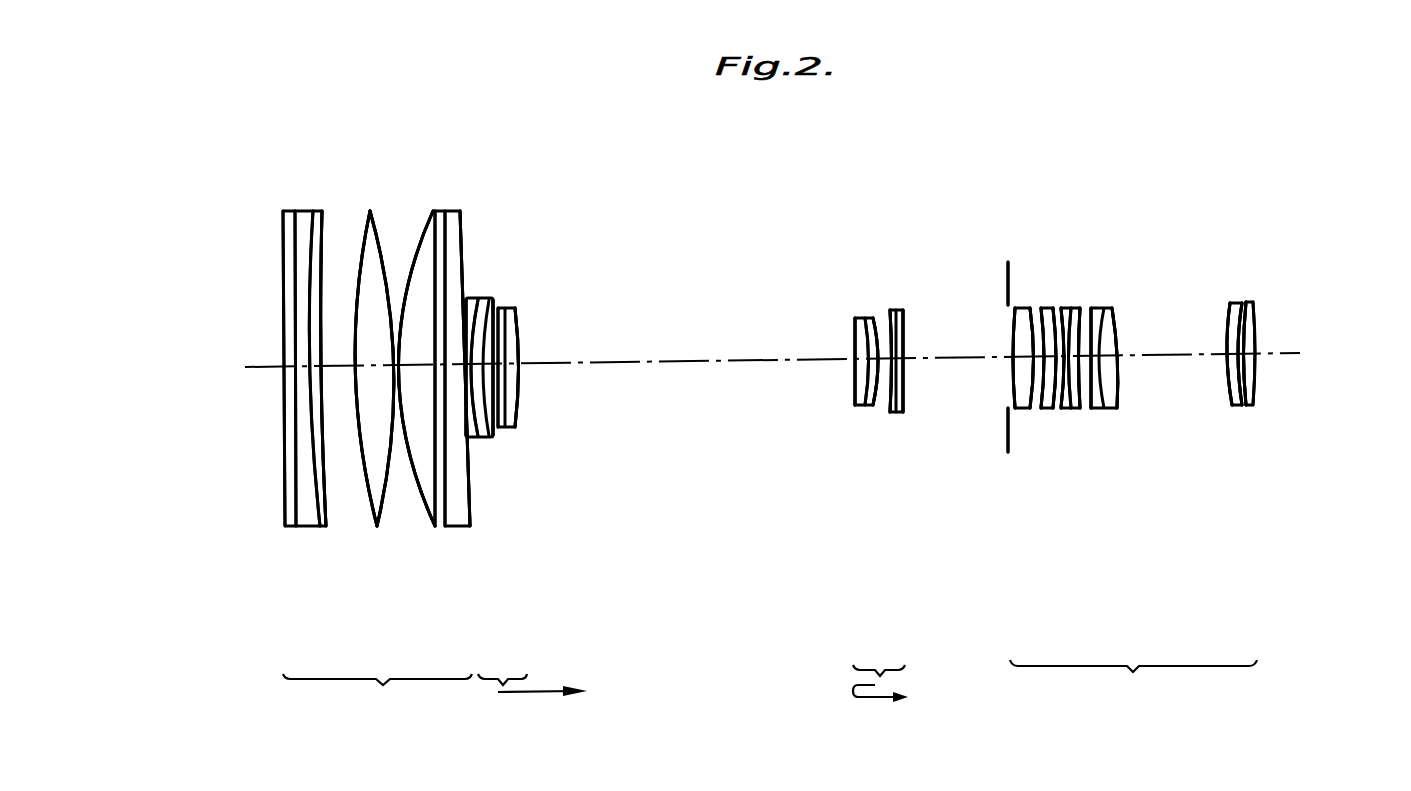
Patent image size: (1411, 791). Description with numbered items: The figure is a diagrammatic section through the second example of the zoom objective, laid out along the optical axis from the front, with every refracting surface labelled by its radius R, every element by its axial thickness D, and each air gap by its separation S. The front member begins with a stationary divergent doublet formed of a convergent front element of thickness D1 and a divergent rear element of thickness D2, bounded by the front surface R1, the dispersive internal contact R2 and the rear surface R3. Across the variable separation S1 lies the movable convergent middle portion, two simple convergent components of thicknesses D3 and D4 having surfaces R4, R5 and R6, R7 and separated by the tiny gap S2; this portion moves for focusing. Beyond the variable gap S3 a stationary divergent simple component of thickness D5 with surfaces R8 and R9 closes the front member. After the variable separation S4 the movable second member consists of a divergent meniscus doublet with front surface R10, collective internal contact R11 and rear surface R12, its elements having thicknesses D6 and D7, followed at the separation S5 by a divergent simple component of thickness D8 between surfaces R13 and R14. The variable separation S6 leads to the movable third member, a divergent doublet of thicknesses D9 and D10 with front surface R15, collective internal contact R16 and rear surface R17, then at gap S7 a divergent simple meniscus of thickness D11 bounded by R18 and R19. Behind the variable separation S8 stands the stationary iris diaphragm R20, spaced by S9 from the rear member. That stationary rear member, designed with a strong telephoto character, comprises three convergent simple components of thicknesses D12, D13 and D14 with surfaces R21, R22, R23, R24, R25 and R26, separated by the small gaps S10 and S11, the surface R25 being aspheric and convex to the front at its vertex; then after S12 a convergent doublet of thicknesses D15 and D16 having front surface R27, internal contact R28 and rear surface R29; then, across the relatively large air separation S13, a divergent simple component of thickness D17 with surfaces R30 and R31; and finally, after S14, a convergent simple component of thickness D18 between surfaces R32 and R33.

The front surface of the front member R1 is at (283, 331).
The dispersive internal contact R2 is at (295, 300).
The rear surface of the stationary front portion R3 is at (325, 258).
The front surface of the front middle component R4 is at (360, 263).
The rear surface of the front middle component R5 is at (373, 237).
The front surface of the rear middle component R6 is at (420, 233).
The rear surface of the rear middle component R7 is at (438, 213).
The front surface of the stationary rear portion R8 is at (447, 210).
The rear surface of the stationary rear portion R9 is at (468, 218).
The front surface of the second member doublet R10 is at (487, 312).
The collective internal contact of the second member doublet R11 is at (493, 318).
The rear surface of the second member doublet R12 is at (502, 318).
The front surface of the second member simple component R13 is at (518, 334).
The rear surface of the second member simple component R14 is at (517, 358).
The front surface of the third member doublet R15 is at (857, 326).
The collective internal contact of the third member doublet R16 is at (860, 320).
The rear surface of the third member doublet R17 is at (868, 316).
The front surface of the third member meniscus R18 is at (891, 312).
The rear surface of the third member meniscus R19 is at (898, 308).
The iris diaphragm R20 is at (1000, 285).
The front surface of the rear member R21 is at (1016, 308).
The rear surface of the first rear convergent component R22 is at (1032, 308).
The front surface of the second rear convergent component R23 is at (1043, 308).
The rear surface of the second rear convergent component R24 is at (1055, 308).
The aspheric surface R25 is at (1063, 308).
The rear surface of the third rear convergent component R26 is at (1072, 308).
The front surface of the rear member doublet R27 is at (1082, 308).
The internal contact of the rear member doublet R28 is at (1093, 308).
The rear surface of the rear member doublet R29 is at (1119, 340).
The front surface of the rear divergent component R30 is at (1236, 303).
The rear surface of the rear divergent component R31 is at (1244, 308).
The front surface of the final convergent component R32 is at (1250, 312).
The rear surface of the objective R33 is at (1256, 330).
The axial thickness of the convergent front element D1 is at (285, 373).
The axial thickness of the divergent rear element D2 is at (300, 384).
The axial thickness of the front middle component D3 is at (375, 405).
The axial thickness of the rear middle component D4 is at (415, 378).
The axial thickness of the stationary rear portion D5 is at (440, 527).
The axial thickness of the divergent element of the second member doublet D6 is at (500, 437).
The axial thickness of the collective element of the second member doublet D7 is at (505, 437).
The axial thickness of the second member simple component D8 is at (518, 382).
The axial thickness of the convergent element of the third member doublet D9 is at (857, 364).
The axial thickness of the divergent element of the third member doublet D10 is at (858, 393).
The axial thickness of the third member meniscus D11 is at (893, 412).
The axial thickness of the first rear convergent component D12 is at (1020, 410).
The axial thickness of the second rear convergent component D13 is at (1050, 410).
The axial thickness of the third rear convergent component D14 is at (1083, 410).
The axial thickness of the front element of the rear doublet D15 is at (1103, 410).
The axial thickness of the rear element of the rear doublet D16 is at (1113, 410).
The axial thickness of the rear divergent component D17 is at (1250, 382).
The axial thickness of the final convergent component D18 is at (1253, 363).
The variable air separation S1 is at (322, 440).
The air separation between middle components S2 is at (395, 372).
The variable air separation S3 is at (433, 445).
The variable air separation S4 is at (467, 432).
The air separation within the second member S5 is at (515, 432).
The variable air separation S6 is at (733, 362).
The air separation within the third member S7 is at (878, 405).
The variable air separation S8 is at (940, 358).
The stop to rear member separation S9 is at (1005, 360).
The air separation in the rear member S10 is at (1021, 408).
The air separation in the rear member S11 is at (1072, 410).
The air separation in the rear member S12 is at (1086, 410).
The relatively large air separation S13 is at (1232, 402).
The air separation in the rear member S14 is at (1253, 377).